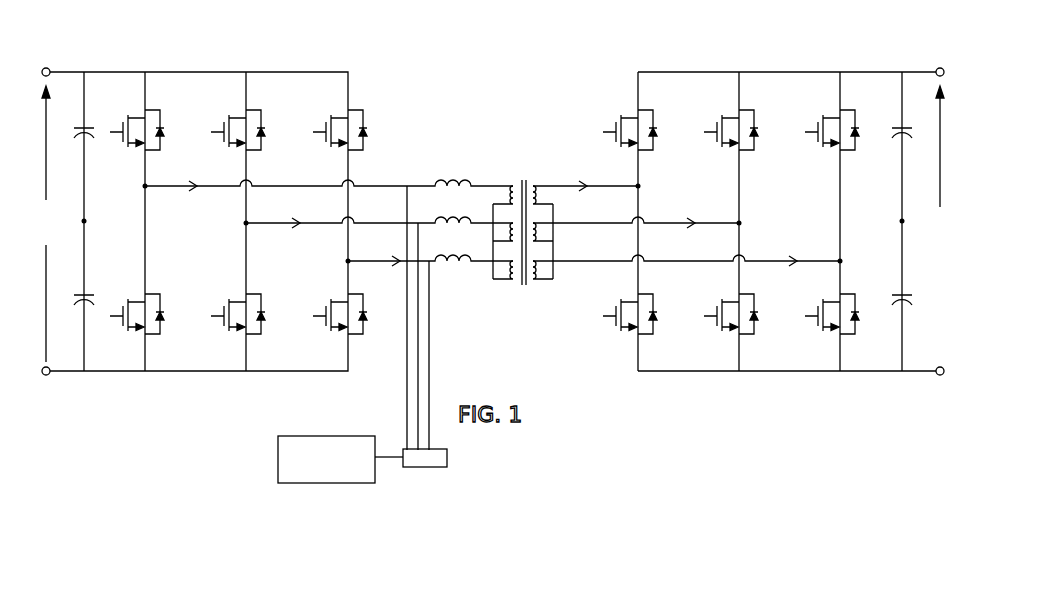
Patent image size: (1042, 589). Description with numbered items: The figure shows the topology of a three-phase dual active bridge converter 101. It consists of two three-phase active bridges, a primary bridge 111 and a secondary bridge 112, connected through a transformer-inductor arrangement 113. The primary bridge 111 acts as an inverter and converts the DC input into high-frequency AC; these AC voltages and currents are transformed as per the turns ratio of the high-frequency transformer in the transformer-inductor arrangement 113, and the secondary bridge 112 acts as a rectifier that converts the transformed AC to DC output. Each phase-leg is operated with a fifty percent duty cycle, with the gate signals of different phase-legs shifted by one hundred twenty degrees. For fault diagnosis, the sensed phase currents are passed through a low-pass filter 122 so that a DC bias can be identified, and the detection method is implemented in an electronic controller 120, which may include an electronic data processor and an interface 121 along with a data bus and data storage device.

The three-phase dual active bridge converter 101 is at (418, 41).
The primary bridge 111 is at (147, 413).
The secondary bridge 112 is at (782, 399).
The transformer-inductor arrangement 113 is at (527, 326).
The electronic controller 120 is at (355, 483).
The interface 121 is at (395, 396).
The low-pass filter 122 is at (432, 468).